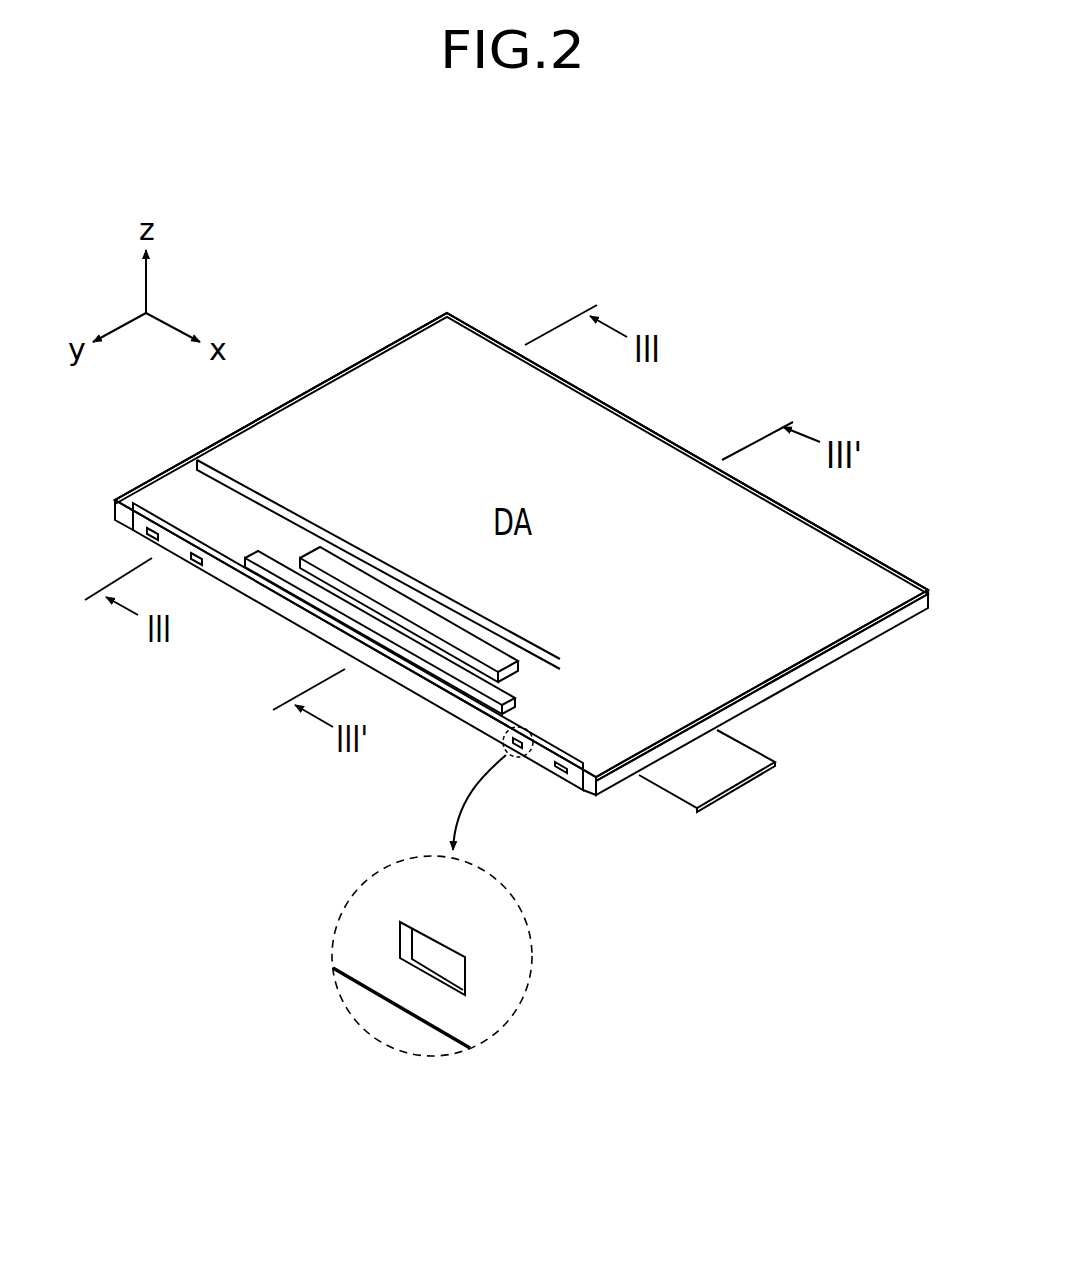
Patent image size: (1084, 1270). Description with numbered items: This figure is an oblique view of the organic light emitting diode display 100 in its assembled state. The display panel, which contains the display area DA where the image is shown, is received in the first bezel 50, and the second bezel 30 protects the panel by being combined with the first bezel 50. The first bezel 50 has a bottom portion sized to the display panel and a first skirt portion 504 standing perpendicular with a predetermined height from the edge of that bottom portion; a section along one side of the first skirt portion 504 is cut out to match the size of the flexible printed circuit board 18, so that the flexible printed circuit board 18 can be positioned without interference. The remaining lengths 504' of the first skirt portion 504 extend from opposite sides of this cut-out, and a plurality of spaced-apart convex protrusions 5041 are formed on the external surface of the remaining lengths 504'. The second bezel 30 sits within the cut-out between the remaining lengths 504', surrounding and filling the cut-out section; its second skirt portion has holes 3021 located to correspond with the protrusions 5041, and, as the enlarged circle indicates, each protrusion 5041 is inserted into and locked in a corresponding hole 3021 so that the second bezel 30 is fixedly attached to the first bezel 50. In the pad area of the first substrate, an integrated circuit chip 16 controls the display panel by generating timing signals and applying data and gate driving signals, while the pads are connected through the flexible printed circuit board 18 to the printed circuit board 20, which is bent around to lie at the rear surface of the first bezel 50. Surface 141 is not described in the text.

The organic light emitting diode display 100 is at (520, 244).
The first bezel 50 is at (424, 321).
The display panel 141 is at (630, 467).
The first skirt portion 504 is at (530, 627).
The remaining lengths of first skirt portion 504' is at (594, 828).
The second bezel 30 is at (320, 624).
The hole 3021 is at (397, 940).
The protrusion 5041 is at (433, 958).
The integrated circuit chip 16 is at (330, 563).
The flexible printed circuit board 18 is at (472, 690).
The printed circuit board 20 is at (722, 772).